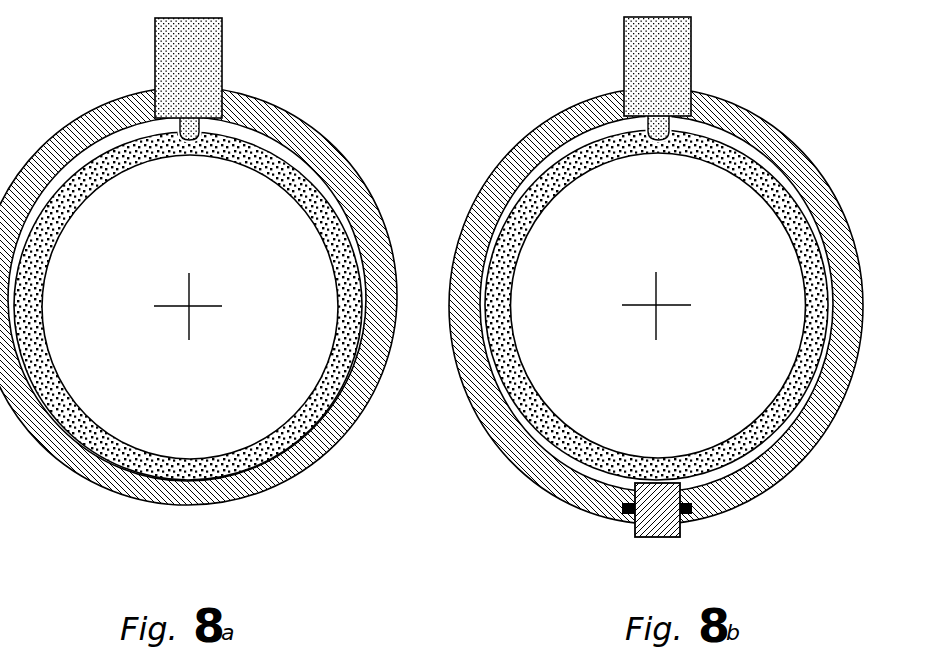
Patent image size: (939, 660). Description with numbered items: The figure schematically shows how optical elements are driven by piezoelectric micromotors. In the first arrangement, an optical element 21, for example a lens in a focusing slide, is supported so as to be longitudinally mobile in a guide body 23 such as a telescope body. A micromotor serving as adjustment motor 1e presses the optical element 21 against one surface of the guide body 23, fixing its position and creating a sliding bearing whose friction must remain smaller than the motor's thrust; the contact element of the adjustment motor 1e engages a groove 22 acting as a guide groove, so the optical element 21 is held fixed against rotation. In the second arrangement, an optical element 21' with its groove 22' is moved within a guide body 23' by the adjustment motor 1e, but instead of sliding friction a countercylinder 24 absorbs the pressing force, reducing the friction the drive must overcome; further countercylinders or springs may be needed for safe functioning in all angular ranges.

In FIG. 8A, the adjustment motor 1e is at (205, 72).
In FIG. 8B, the adjustment motor 1e is at (637, 68).
In FIG. 8A, the optical element 21 is at (225, 292).
In FIG. 8B, the optical element 21' is at (608, 305).
In FIG. 8A, the groove 22 is at (109, 112).
In FIG. 8B, the groove 22' is at (737, 104).
In FIG. 8A, the guide body 23 is at (210, 296).
In FIG. 8B, the guide body 23' is at (636, 306).
In FIG. 8B, the countercylinder 24 is at (637, 535).